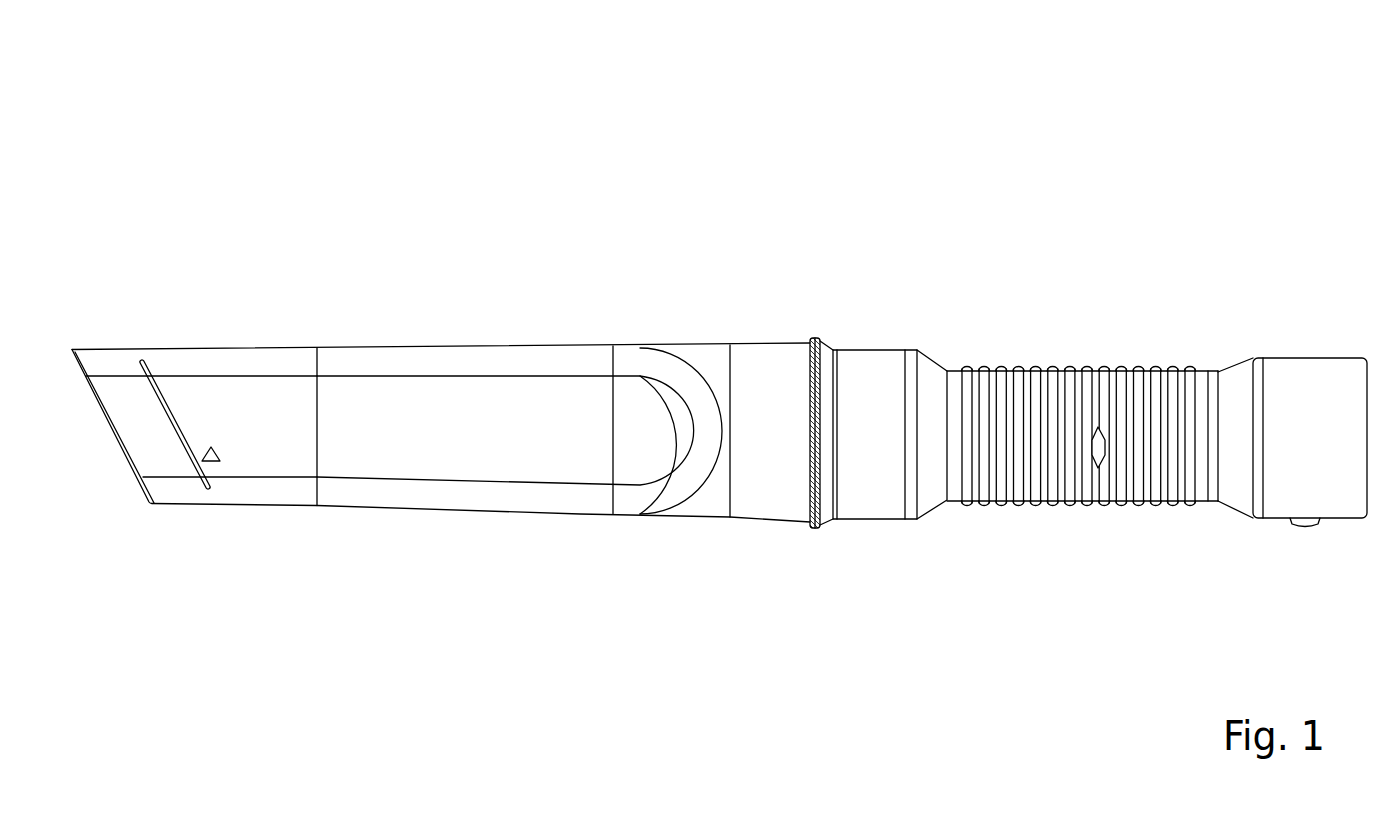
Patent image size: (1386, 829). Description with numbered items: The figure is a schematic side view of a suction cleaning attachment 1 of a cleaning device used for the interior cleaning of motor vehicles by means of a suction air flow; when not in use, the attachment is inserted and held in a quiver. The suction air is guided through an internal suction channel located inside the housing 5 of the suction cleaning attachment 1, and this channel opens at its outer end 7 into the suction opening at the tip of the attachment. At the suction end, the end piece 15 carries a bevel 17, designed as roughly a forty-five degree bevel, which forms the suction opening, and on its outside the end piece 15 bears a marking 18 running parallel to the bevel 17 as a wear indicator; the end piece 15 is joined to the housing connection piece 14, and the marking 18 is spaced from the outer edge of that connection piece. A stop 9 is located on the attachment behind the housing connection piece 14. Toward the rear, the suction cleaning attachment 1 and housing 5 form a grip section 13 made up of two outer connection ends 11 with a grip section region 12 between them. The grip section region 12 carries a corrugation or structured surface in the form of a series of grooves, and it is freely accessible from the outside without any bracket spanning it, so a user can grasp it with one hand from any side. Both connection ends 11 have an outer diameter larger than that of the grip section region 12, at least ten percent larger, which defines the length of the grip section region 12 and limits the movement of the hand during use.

The suction cleaning attachment 1 is at (1077, 126).
The housing 5 is at (599, 222).
The outer end of suction channel 7 is at (120, 454).
The stop 9 is at (818, 337).
The connection end 11 is at (882, 348).
The grip section region 12 is at (1062, 395).
The grip section 13 is at (1052, 526).
The housing connection piece 14 is at (472, 307).
The end piece 15 is at (240, 305).
The bevel 17 is at (101, 393).
The marking 18 is at (164, 392).